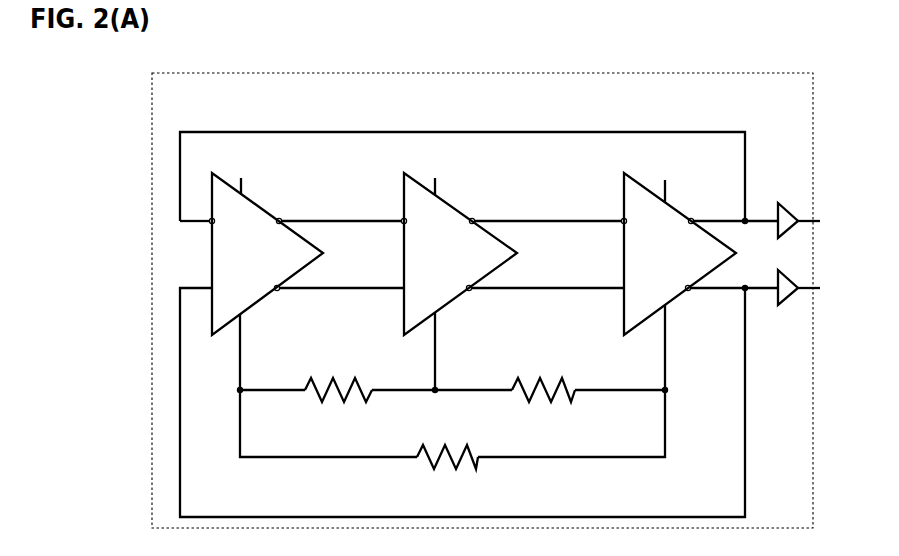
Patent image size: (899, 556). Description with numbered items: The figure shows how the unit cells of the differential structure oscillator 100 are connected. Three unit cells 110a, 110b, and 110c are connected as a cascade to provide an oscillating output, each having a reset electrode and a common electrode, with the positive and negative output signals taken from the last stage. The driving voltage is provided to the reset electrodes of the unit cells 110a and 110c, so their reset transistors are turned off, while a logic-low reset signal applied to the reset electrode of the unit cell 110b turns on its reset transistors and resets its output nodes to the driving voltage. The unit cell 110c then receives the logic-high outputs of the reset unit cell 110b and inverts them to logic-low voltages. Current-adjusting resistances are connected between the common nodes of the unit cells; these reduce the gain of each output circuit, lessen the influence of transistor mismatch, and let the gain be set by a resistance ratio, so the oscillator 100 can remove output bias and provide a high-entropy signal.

The differential structure oscillator 100 is at (215, 110).
The unit cell 110a is at (284, 218).
The unit cell 110b is at (479, 218).
The unit cell 110c is at (713, 238).